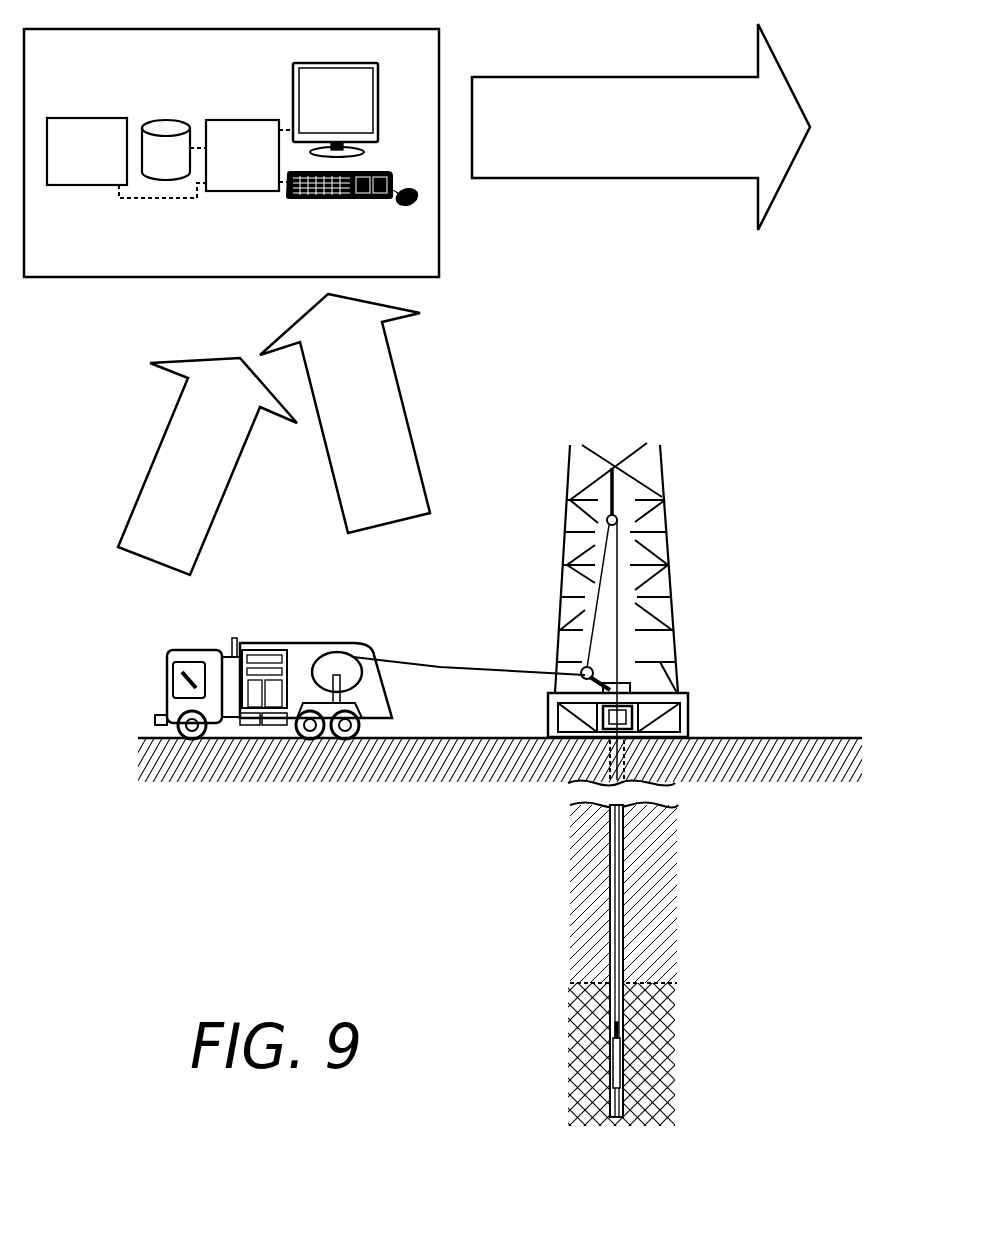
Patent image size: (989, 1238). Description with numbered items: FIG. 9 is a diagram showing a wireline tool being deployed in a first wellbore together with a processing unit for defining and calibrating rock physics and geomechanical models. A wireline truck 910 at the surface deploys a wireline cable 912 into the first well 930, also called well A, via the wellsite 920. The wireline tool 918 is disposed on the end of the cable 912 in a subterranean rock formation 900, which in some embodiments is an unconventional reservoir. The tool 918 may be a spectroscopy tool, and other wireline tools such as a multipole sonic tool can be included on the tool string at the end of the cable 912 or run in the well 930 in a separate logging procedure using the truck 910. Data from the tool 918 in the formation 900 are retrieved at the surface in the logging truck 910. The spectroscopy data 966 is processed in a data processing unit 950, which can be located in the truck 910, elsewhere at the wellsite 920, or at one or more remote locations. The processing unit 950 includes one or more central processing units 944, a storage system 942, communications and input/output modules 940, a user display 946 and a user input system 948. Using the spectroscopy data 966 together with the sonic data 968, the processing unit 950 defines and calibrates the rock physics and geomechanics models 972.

The subterranean rock formation 900 is at (652, 1046).
The wireline truck 910 is at (310, 643).
The wireline cable 912 is at (447, 666).
The wireline tool 918 is at (617, 1073).
The wellsite 920 is at (722, 680).
The first well 930 is at (610, 858).
The communications and input/output modules 940 is at (67, 169).
The storage system 942 is at (173, 127).
The central processing units 944 is at (222, 169).
The user display 946 is at (316, 112).
The user input system 948 is at (396, 158).
The data processing unit 950 is at (370, 259).
The spectroscopy data 966 is at (395, 405).
The sonic data 968 is at (162, 455).
The rock physics and geomechanics models 972 is at (599, 167).